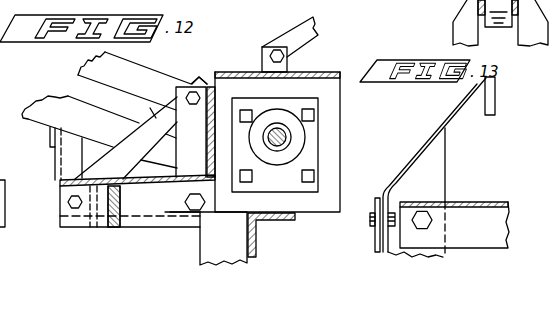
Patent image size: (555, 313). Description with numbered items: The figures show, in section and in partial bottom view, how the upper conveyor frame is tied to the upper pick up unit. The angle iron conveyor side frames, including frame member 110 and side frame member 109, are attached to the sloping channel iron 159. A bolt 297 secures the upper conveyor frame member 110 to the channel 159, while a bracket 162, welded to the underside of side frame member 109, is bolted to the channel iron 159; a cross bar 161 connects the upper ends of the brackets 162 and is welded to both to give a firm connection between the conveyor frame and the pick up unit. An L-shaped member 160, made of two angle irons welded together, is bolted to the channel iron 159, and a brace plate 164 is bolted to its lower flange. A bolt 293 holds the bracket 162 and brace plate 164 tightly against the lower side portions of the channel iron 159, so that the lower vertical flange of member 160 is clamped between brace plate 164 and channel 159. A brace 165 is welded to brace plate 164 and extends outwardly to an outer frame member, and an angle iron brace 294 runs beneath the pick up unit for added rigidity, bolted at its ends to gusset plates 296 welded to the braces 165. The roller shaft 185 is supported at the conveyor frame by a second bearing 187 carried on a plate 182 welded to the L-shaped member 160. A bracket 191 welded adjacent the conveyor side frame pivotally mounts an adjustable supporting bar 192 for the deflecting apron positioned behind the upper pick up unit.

In FIG. 12, the upper conveyor frame member 110 is at (132, 65).
In FIG. 12, the bolt 297 is at (175, 90).
In FIG. 12, the channel iron 159 is at (150, 120).
In FIG. 12, the conveyor side frame member 109 is at (69, 97).
In FIG. 12, the cross bar 161 is at (50, 140).
In FIG. 12, the L-shaped member 160 is at (153, 163).
In FIG. 12, the bolt 293 is at (67, 202).
In FIG. 12, the bracket 162 is at (55, 208).
In FIG. 12, the brace 165 is at (100, 227).
In FIG. 13, the brace 165 is at (406, 173).
In FIG. 12, the brace plate 164 is at (165, 225).
In FIG. 13, the brace plate 164 is at (487, 113).
In FIG. 12, the angle iron brace 294 is at (260, 222).
In FIG. 13, the angle iron brace 294 is at (472, 203).
In FIG. 12, the adjustable supporting bar 192 is at (320, 33).
In FIG. 12, the bracket 191 is at (287, 65).
In FIG. 12, the plate 182 is at (313, 80).
In FIG. 12, the second bearing 187 is at (297, 132).
In FIG. 12, the shaft 185 is at (292, 142).
In FIG. 13, the gusset plate 296 is at (437, 180).